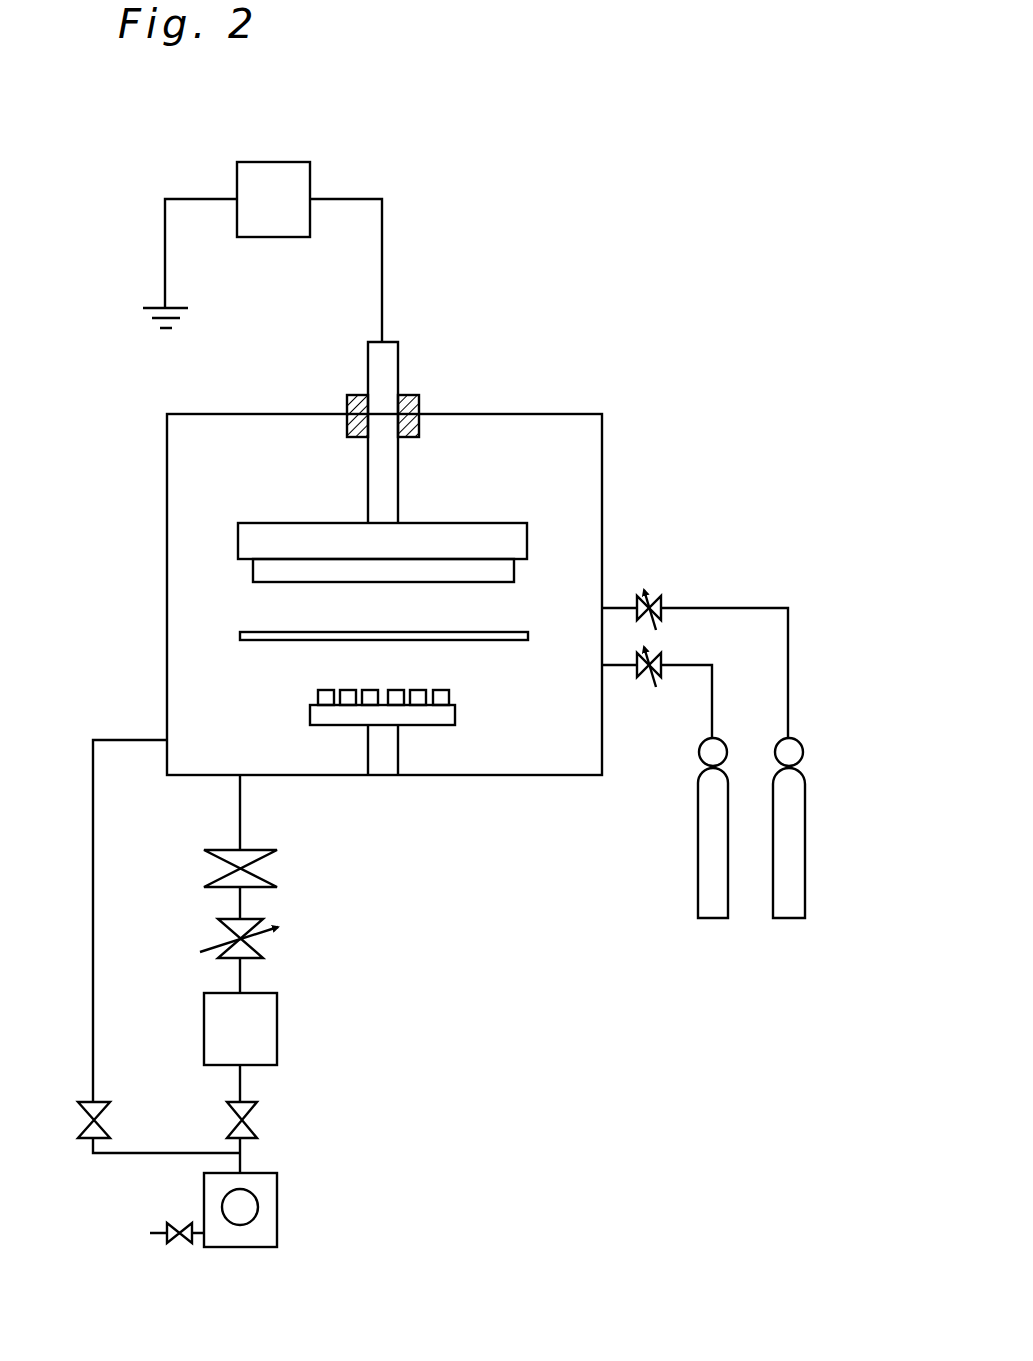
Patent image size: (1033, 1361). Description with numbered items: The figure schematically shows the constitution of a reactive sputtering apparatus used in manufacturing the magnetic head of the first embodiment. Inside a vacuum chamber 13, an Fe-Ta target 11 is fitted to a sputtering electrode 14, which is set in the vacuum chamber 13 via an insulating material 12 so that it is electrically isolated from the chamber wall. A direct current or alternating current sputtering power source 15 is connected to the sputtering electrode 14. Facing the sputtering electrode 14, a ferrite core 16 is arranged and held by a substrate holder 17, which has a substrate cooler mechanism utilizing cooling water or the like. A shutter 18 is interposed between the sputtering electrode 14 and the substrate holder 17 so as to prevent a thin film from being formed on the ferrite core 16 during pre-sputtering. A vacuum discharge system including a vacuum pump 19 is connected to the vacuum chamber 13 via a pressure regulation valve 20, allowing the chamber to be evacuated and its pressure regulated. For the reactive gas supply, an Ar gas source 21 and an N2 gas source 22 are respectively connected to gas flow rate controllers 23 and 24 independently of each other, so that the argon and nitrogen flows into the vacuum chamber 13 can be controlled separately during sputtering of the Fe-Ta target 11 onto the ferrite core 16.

The Fe-Ta target 11 is at (253, 578).
The insulating material 12 is at (419, 400).
The vacuum chamber 13 is at (603, 447).
The sputtering electrode 14 is at (235, 540).
The sputtering power source 15 is at (312, 170).
The ferrite core 16 is at (450, 694).
The substrate holder 17 is at (337, 728).
The shutter 18 is at (240, 636).
The vacuum pump 19 is at (277, 1035).
The pressure regulation valve 20 is at (265, 950).
The Ar gas source 21 is at (805, 877).
The N2 gas source 22 is at (697, 873).
The gas flow rate controller 23 is at (657, 593).
The gas flow rate controller 24 is at (646, 682).